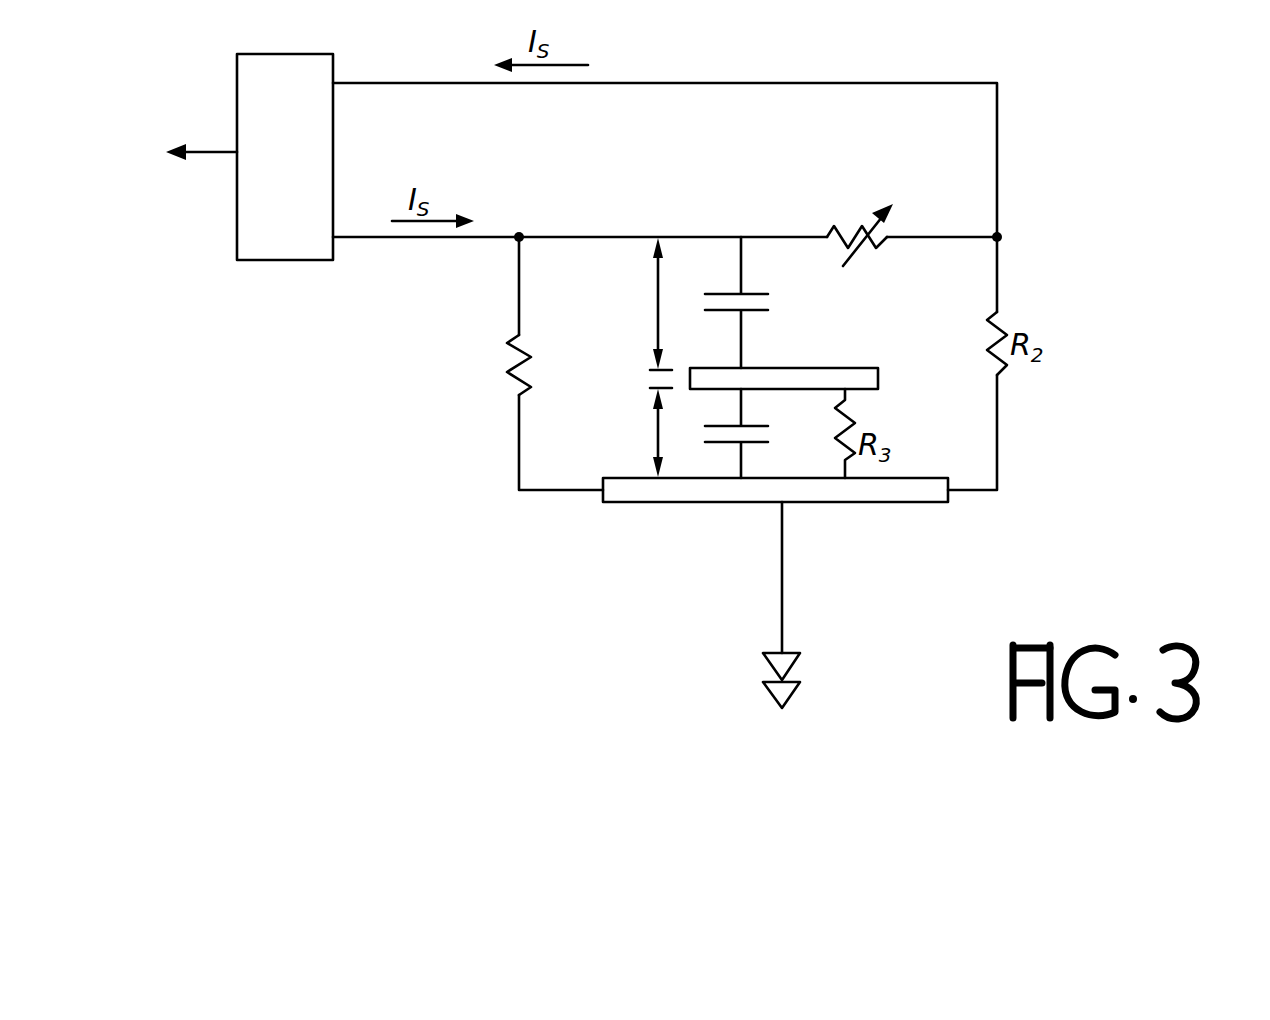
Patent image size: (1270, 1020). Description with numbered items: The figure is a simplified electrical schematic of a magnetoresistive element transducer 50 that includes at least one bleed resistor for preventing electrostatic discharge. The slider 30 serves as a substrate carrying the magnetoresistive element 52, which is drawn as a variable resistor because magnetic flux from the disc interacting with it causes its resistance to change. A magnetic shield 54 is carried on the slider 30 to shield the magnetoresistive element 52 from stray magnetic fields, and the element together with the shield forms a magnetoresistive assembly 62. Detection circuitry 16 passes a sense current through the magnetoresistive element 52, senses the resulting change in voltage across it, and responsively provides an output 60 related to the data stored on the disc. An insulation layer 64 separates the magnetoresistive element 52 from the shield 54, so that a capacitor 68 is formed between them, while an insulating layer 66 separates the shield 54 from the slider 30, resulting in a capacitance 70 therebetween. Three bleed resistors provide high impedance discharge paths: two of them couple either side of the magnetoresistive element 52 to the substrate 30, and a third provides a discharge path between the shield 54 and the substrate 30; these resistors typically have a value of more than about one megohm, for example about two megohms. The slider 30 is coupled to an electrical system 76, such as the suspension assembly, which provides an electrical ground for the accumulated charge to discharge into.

The detection circuitry 16 is at (300, 180).
The slider 30 is at (948, 494).
The magnetoresistive element transducer 50 is at (497, 393).
The magnetoresistive element 52 is at (900, 222).
The magnetic shield 54 is at (878, 368).
The output 60 is at (208, 150).
The magnetoresistive assembly 62 is at (618, 370).
The insulation layer 64 is at (657, 310).
The insulating layer 66 is at (657, 436).
The capacitor 68 is at (760, 312).
The capacitance 70 is at (755, 443).
The electrical system 76 is at (797, 685).